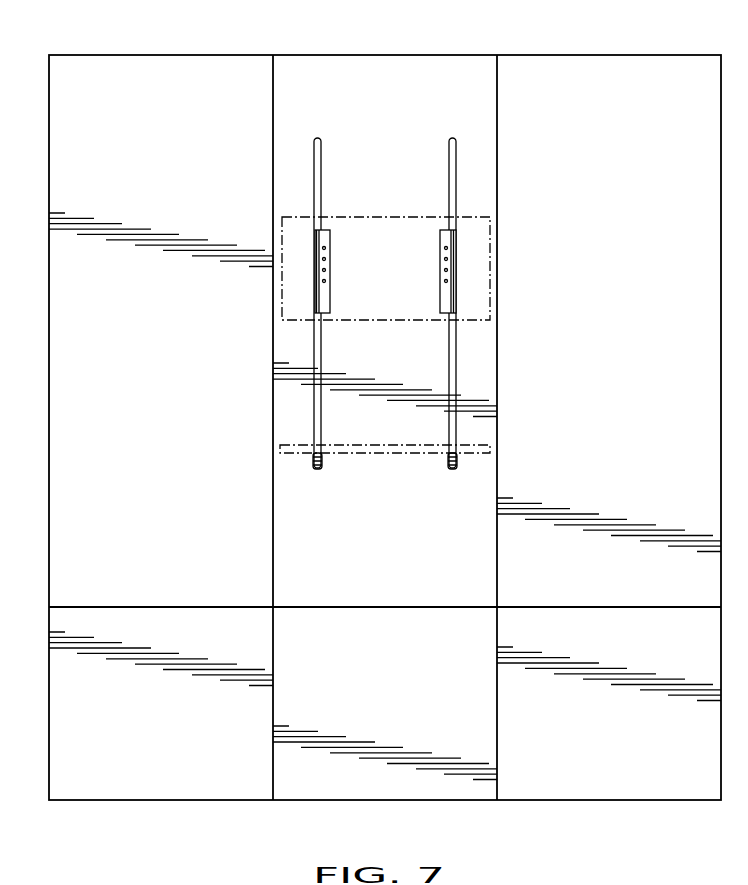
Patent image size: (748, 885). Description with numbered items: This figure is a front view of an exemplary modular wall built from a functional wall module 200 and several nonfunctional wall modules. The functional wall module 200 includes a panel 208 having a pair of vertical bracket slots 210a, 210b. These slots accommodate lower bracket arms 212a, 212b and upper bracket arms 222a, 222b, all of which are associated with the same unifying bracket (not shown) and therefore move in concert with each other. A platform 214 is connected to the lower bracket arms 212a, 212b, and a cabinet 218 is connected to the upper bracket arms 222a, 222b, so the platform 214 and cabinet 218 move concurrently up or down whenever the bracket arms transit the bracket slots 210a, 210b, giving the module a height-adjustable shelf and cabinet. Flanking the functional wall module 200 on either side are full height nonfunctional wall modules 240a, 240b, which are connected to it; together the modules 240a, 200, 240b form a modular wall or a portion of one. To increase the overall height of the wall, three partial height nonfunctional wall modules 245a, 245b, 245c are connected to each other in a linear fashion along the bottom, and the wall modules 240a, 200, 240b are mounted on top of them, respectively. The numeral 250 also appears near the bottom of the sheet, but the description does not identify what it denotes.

The panel 208 is at (453, 80).
The bracket slot 210a is at (318, 151).
The bracket slot 210b is at (452, 192).
The upper bracket arm 222a is at (324, 314).
The upper bracket arm 222b is at (448, 316).
The cabinet 218 is at (388, 330).
The platform 214 is at (413, 457).
The lower bracket arm 212a is at (313, 462).
The lower bracket arm 212b is at (457, 462).
The nonfunctional wall module 240a is at (178, 557).
The nonfunctional wall module 240b is at (630, 580).
The functional wall module 200 is at (410, 584).
The partial height nonfunctional wall module 245a is at (182, 740).
The partial height nonfunctional wall module 245b is at (417, 687).
The partial height nonfunctional wall module 245c is at (633, 744).
The display assembly 250 is at (609, 884).